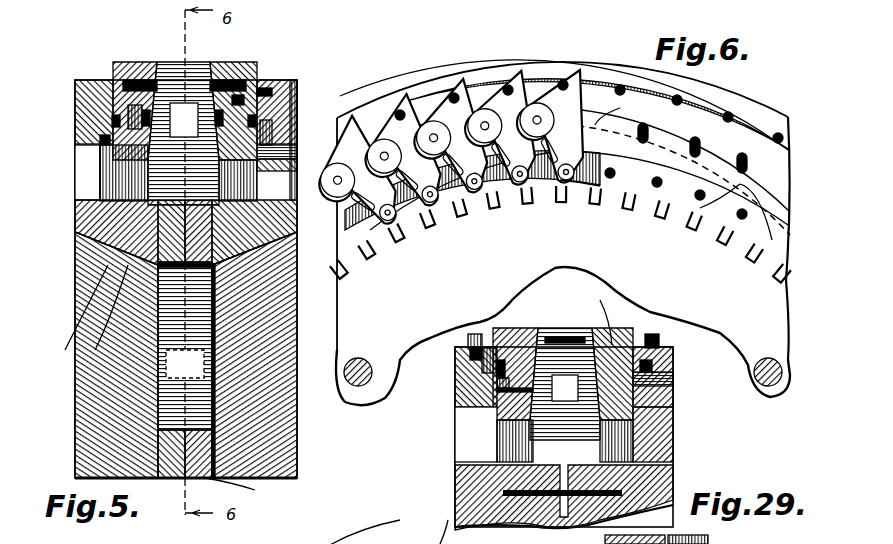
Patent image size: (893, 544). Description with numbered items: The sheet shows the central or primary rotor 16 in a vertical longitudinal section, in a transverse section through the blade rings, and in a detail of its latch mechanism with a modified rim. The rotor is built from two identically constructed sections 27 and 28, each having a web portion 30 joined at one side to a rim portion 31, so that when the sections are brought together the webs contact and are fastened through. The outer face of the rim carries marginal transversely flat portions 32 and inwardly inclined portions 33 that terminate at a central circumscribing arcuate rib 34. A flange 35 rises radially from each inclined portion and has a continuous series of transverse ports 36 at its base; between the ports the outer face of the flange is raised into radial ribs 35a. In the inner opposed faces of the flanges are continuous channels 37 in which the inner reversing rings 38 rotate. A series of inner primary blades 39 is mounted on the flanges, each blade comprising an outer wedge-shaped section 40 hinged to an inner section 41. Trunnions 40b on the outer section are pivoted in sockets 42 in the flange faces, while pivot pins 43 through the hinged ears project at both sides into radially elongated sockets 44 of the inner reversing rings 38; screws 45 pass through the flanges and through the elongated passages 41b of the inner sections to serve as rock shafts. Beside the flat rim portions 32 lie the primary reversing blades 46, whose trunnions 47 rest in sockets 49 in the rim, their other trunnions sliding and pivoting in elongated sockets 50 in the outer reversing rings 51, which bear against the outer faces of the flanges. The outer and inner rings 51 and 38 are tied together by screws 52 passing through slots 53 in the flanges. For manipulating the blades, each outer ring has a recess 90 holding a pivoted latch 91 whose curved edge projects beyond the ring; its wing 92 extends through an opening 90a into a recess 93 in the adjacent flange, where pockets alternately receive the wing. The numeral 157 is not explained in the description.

In FIG. 5, the primary rotor 16 is at (82, 64).
In FIG. 6, the primary rotor 16 is at (769, 105).
In FIG. 29, the primary rotor 16 is at (446, 381).
In FIG. 5, the rotor section 27 is at (152, 453).
In FIG. 6, the rotor section 27 is at (337, 350).
In FIG. 5, the rotor section 28 is at (225, 450).
In FIG. 5, the web portion 30 is at (241, 488).
In FIG. 29, the web portion 30 is at (610, 318).
In FIG. 5, the rim portion 31 is at (110, 262).
In FIG. 29, the rim portion 31 is at (675, 520).
In FIG. 5, the transversely flat portion 32 is at (95, 262).
In FIG. 5, the inwardly inclined portion 33 is at (265, 240).
In FIG. 29, the inwardly inclined portion 33 is at (672, 420).
In FIG. 5, the arcuate rib 34 is at (124, 348).
In FIG. 29, the arcuate rib 34 is at (683, 537).
In FIG. 5, the flange 35 is at (120, 70).
In FIG. 6, the flange 35 is at (540, 68).
In FIG. 29, the flange 35 is at (530, 335).
In FIG. 5, the radial rib 35a is at (125, 168).
In FIG. 29, the radial rib 35a is at (490, 432).
In FIG. 5, the transverse port 36 is at (85, 188).
In FIG. 6, the transverse port 36 is at (738, 186).
In FIG. 29, the transverse port 36 is at (500, 440).
In FIG. 5, the channel 37 is at (296, 100).
In FIG. 6, the channel 37 is at (696, 117).
In FIG. 29, the channel 37 is at (575, 336).
In FIG. 5, the inner reversing ring 38 is at (125, 95).
In FIG. 6, the inner reversing ring 38 is at (775, 208).
In FIG. 29, the inner reversing ring 38 is at (500, 390).
In FIG. 5, the inner primary blade 39 is at (185, 80).
In FIG. 6, the inner primary blade 39 is at (481, 77).
In FIG. 29, the inner primary blade 39 is at (568, 325).
In FIG. 5, the outer wedge-shaped section 40 is at (148, 108).
In FIG. 6, the outer wedge-shaped section 40 is at (592, 85).
In FIG. 5, the trunnion 40b is at (240, 93).
In FIG. 6, the trunnion 40b is at (408, 110).
In FIG. 5, the inner section 41 is at (70, 345).
In FIG. 6, the inner section 41 is at (515, 185).
In FIG. 6, the elongated passage 41b is at (433, 225).
In FIG. 6, the socket 42 is at (677, 95).
In FIG. 5, the pivot pin 43 is at (110, 140).
In FIG. 6, the pivot pin 43 is at (640, 165).
In FIG. 29, the pivot pin 43 is at (680, 368).
In FIG. 5, the radially elongated socket 44 is at (142, 108).
In FIG. 6, the radially elongated socket 44 is at (738, 160).
In FIG. 29, the radially elongated socket 44 is at (505, 385).
In FIG. 5, the screw 45 is at (298, 138).
In FIG. 6, the screw 45 is at (578, 200).
In FIG. 29, the screw 45 is at (674, 382).
In FIG. 5, the primary reversing blade 46 is at (298, 163).
In FIG. 29, the primary reversing blade 46 is at (475, 462).
In FIG. 5, the trunnion 47 is at (297, 222).
In FIG. 5, the socket 49 is at (135, 235).
In FIG. 5, the elongated socket 50 is at (300, 110).
In FIG. 5, the outer reversing ring 51 is at (80, 88).
In FIG. 29, the outer reversing ring 51 is at (470, 355).
In FIG. 5, the screw 52 is at (330, 84).
In FIG. 6, the screw 52 is at (669, 140).
In FIG. 5, the slot 53 is at (112, 120).
In FIG. 6, the slot 53 is at (612, 80).
In FIG. 29, the recess 90 is at (500, 378).
In FIG. 29, the opening 90a is at (490, 348).
In FIG. 29, the latch 91 is at (470, 350).
In FIG. 29, the wing 92 is at (500, 332).
In FIG. 29, the recess 93 is at (426, 532).
In FIG. 29, the bar 157 is at (670, 478).